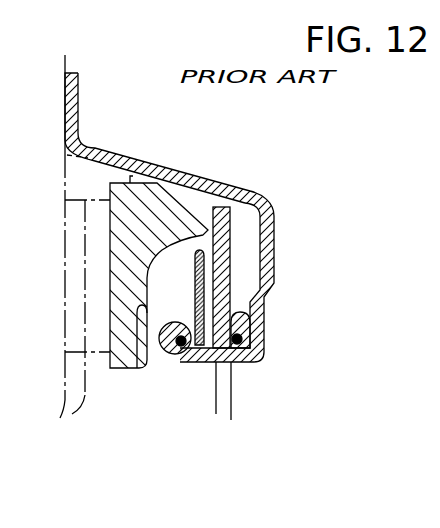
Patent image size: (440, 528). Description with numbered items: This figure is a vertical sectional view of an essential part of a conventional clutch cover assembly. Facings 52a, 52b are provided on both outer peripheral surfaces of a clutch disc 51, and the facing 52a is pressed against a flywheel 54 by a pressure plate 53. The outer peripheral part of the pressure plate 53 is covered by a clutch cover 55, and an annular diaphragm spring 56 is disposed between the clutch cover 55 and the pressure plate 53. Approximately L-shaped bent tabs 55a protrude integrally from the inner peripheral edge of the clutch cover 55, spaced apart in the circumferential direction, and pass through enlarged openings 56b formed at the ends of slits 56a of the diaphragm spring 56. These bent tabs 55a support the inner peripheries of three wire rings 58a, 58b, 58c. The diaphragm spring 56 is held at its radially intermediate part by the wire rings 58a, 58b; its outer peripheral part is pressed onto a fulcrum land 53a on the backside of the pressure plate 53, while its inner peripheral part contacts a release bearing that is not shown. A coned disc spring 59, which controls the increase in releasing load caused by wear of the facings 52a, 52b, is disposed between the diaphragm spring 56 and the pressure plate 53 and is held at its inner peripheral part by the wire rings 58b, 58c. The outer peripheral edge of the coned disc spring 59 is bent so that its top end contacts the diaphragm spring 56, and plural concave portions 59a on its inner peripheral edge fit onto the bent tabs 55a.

The clutch disc 51 is at (90, 362).
The facing 52a is at (56, 246).
The facing 52b is at (110, 373).
The pressure plate 53 is at (150, 160).
The fulcrum land 53a is at (218, 205).
The flywheel 54 is at (83, 176).
The clutch cover 55 is at (130, 142).
The bent tab 55a is at (248, 366).
The diaphragm spring 56 is at (238, 266).
The slit 56a is at (218, 393).
The enlarged opening 56b is at (233, 380).
The wire ring 58a is at (250, 337).
The wire ring 58b is at (232, 320).
The wire ring 58c is at (178, 362).
The coned disc spring 59 is at (187, 270).
The concave portion 59a is at (186, 318).